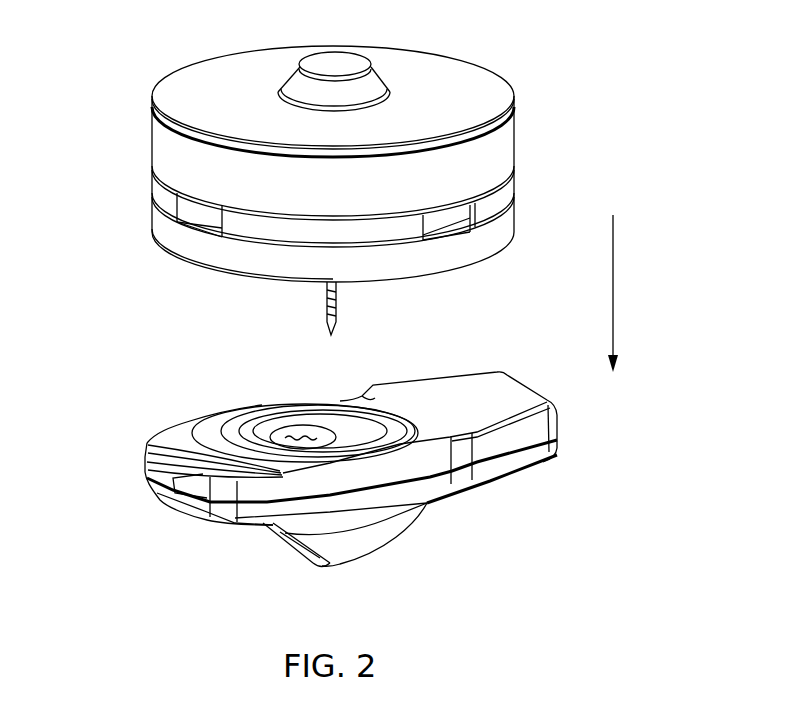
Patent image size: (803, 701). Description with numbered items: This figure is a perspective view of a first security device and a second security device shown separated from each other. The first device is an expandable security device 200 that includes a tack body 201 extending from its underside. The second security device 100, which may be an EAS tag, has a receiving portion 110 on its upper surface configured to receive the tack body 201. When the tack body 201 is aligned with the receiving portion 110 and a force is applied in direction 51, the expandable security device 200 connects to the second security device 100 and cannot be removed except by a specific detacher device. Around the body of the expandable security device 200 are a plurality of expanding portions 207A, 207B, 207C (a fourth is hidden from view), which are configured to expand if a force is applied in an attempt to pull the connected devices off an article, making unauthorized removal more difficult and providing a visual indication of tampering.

The second security device 100 is at (508, 500).
The receiving portion 110 is at (333, 438).
The expandable security device 200 is at (175, 43).
The tack body 201 is at (336, 311).
The expanding portion 207A is at (513, 190).
The expanding portion 207B is at (160, 189).
The expanding portion 207C is at (252, 224).
The direction 51 is at (613, 282).